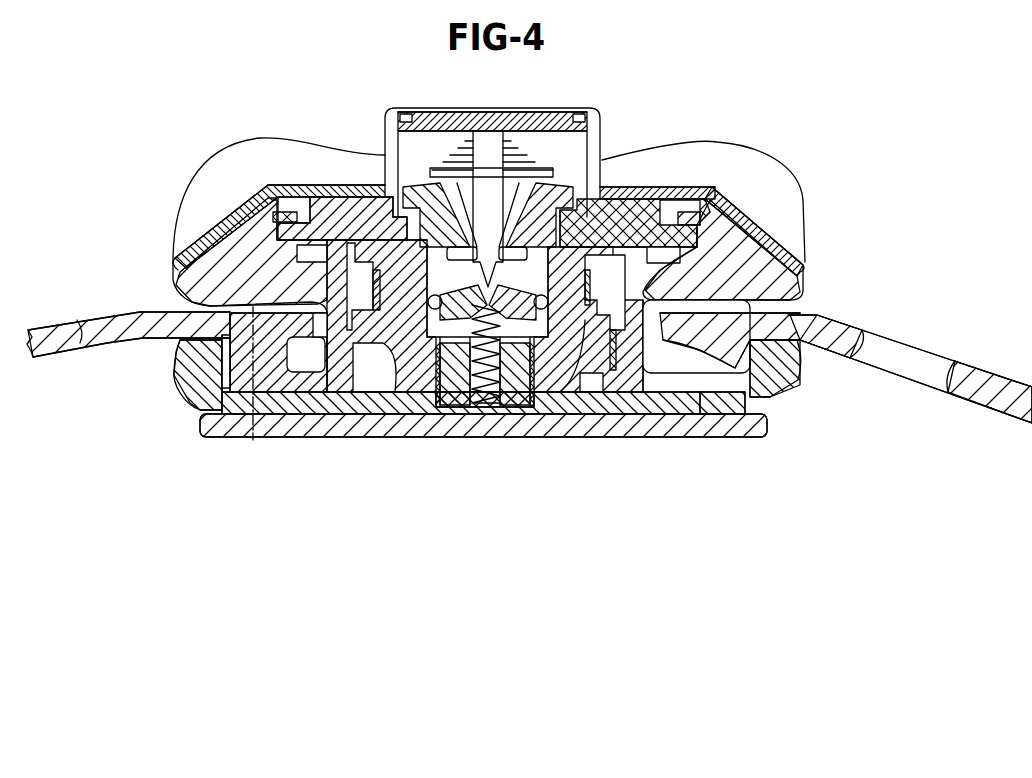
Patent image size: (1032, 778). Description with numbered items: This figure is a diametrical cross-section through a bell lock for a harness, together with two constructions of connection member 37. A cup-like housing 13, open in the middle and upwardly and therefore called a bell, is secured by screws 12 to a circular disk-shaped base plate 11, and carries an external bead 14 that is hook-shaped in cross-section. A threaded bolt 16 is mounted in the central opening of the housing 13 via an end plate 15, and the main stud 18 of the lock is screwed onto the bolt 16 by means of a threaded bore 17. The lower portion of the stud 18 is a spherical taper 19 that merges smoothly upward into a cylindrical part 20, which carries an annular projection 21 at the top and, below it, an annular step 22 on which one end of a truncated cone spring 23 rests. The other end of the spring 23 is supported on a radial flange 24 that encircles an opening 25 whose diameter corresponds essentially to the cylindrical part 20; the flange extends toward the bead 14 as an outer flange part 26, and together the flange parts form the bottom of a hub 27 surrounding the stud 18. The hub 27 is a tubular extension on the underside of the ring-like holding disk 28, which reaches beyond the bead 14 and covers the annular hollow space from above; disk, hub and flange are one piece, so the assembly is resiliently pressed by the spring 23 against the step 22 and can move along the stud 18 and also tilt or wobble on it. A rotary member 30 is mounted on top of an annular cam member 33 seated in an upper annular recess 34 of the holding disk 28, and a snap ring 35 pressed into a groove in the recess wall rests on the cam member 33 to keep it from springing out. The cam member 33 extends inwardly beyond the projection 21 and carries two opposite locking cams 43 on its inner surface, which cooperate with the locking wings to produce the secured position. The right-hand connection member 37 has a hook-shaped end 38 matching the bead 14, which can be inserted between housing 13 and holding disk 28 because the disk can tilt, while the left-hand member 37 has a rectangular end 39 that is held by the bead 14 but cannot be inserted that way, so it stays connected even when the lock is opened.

The base plate 11 is at (228, 427).
The screws 12 is at (255, 439).
The housing 13 is at (727, 407).
The external bead 14 is at (783, 380).
The end plate 15 is at (433, 407).
The threaded bolt 16 is at (453, 392).
The threaded bore 17 is at (378, 403).
The main stud 18 is at (583, 250).
The taper 19 is at (587, 368).
The cylindrical part 20 is at (605, 308).
The annular projection 21 is at (660, 194).
The annular step 22 is at (727, 222).
The truncated cone spring 23 is at (381, 316).
The radial flange 24 is at (353, 387).
The opening 25 is at (577, 387).
The outer flange part 26 is at (702, 388).
The hub 27 is at (335, 348).
The holding disk 28 is at (787, 283).
The rotary member 30 is at (345, 188).
The cam member 33 is at (323, 205).
The annular recess 34 is at (682, 204).
The snap ring 35 is at (288, 214).
The connection members 37 is at (68, 342).
The end 38 is at (738, 360).
The end 39 is at (228, 377).
The locking cams 43 is at (567, 227).